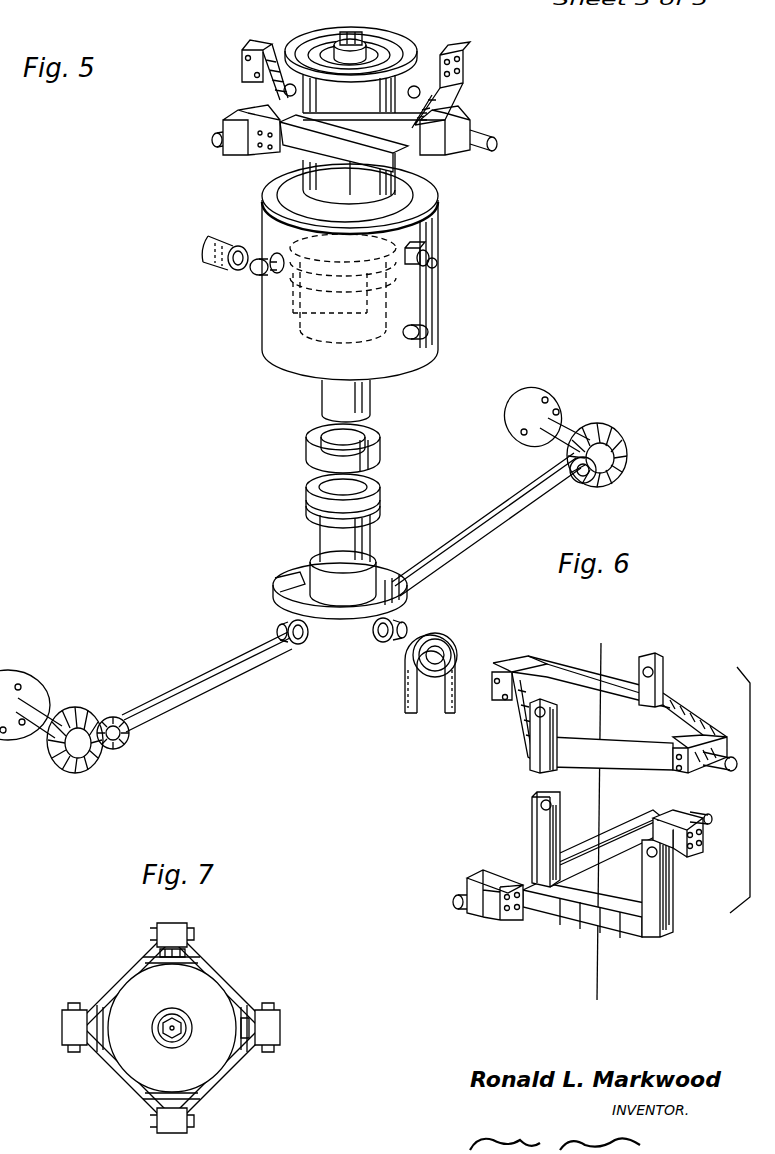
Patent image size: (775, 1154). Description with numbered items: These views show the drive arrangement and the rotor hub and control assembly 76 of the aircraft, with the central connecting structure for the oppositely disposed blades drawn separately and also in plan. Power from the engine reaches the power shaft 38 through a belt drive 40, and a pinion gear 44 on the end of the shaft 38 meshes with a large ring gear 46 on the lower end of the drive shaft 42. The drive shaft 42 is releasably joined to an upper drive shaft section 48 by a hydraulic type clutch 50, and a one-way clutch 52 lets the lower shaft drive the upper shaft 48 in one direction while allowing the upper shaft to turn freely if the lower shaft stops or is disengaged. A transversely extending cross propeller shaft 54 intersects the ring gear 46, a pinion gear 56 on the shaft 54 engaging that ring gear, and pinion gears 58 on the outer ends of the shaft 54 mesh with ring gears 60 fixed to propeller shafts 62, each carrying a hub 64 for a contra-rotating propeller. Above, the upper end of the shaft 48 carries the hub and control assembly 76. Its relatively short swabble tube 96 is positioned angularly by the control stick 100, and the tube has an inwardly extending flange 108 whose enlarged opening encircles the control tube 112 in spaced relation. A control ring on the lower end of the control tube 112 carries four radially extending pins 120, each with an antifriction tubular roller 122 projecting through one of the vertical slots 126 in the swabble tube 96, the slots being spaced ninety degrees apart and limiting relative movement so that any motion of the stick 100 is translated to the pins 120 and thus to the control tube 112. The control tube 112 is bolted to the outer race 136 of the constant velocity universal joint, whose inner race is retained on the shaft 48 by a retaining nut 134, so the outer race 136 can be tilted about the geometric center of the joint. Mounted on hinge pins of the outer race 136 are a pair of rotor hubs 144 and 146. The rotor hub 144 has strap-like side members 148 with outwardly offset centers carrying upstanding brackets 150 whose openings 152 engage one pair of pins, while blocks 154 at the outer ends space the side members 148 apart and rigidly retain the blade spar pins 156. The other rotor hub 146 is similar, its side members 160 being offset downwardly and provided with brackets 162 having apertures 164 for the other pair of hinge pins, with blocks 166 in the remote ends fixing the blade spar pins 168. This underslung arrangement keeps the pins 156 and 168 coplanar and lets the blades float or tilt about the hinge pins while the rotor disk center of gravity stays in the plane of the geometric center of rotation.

In FIG. 5, the power shaft 38 is at (437, 633).
In FIG. 5, the belt drive 40 is at (405, 705).
In FIG. 5, the drive shaft 42 is at (360, 538).
In FIG. 5, the pinion gear 44 is at (378, 642).
In FIG. 5, the ring gear 46 is at (380, 565).
In FIG. 5, the upper drive shaft section 48 is at (370, 400).
In FIG. 5, the hydraulic type clutch 50 is at (378, 498).
In FIG. 5, the one-way clutch 52 is at (306, 453).
In FIG. 5, the cross propeller shaft 54 is at (222, 700).
In FIG. 5, the pinion gear 56 is at (300, 645).
In FIG. 5, the pinion gears 58 is at (135, 733).
In FIG. 5, the ring gears 60 is at (72, 773).
In FIG. 5, the propeller shafts 62 is at (50, 722).
In FIG. 5, the hub 64 is at (36, 680).
In FIG. 5, the hub and control assembly 76 is at (483, 181).
In FIG. 5, the swabble tube 96 is at (265, 318).
In FIG. 5, the control stick 100 is at (210, 258).
In FIG. 5, the inwardly extending flange 108 is at (420, 208).
In FIG. 5, the control tube 112 is at (385, 193).
In FIG. 5, the radially extending pins 120 is at (434, 268).
In FIG. 5, the antifriction tubular roller 122 is at (428, 262).
In FIG. 5, the vertical slots 126 is at (425, 255).
In FIG. 5, the retaining nut 134 is at (362, 40).
In FIG. 7, the retaining nut 134 is at (167, 1020).
In FIG. 5, the outer race 136 is at (405, 63).
In FIG. 7, the outer race 136 is at (207, 990).
In FIG. 6, the rotor hub 144 is at (684, 684).
In FIG. 6, the rotor hub 146 is at (566, 934).
In FIG. 5, the side members 148 is at (260, 96).
In FIG. 6, the side members 148 is at (568, 685).
In FIG. 7, the side members 148 is at (213, 1096).
In FIG. 5, the upstanding brackets 150 is at (275, 103).
In FIG. 6, the upstanding brackets 150 is at (537, 732).
In FIG. 7, the upstanding brackets 150 is at (250, 1010).
In FIG. 6, the openings 152 is at (650, 655).
In FIG. 6, the blocks 154 is at (697, 740).
In FIG. 5, the blade spar pins 156 is at (492, 135).
In FIG. 6, the blade spar pins 156 is at (720, 772).
In FIG. 5, the side members 160 is at (328, 146).
In FIG. 6, the side members 160 is at (634, 930).
In FIG. 5, the brackets 162 is at (463, 62).
In FIG. 6, the brackets 162 is at (537, 828).
In FIG. 7, the brackets 162 is at (183, 957).
In FIG. 6, the apertures 164 is at (538, 803).
In FIG. 6, the blocks 166 is at (483, 907).
In FIG. 5, the blade spar pins 168 is at (220, 152).
In FIG. 6, the blade spar pins 168 is at (463, 915).